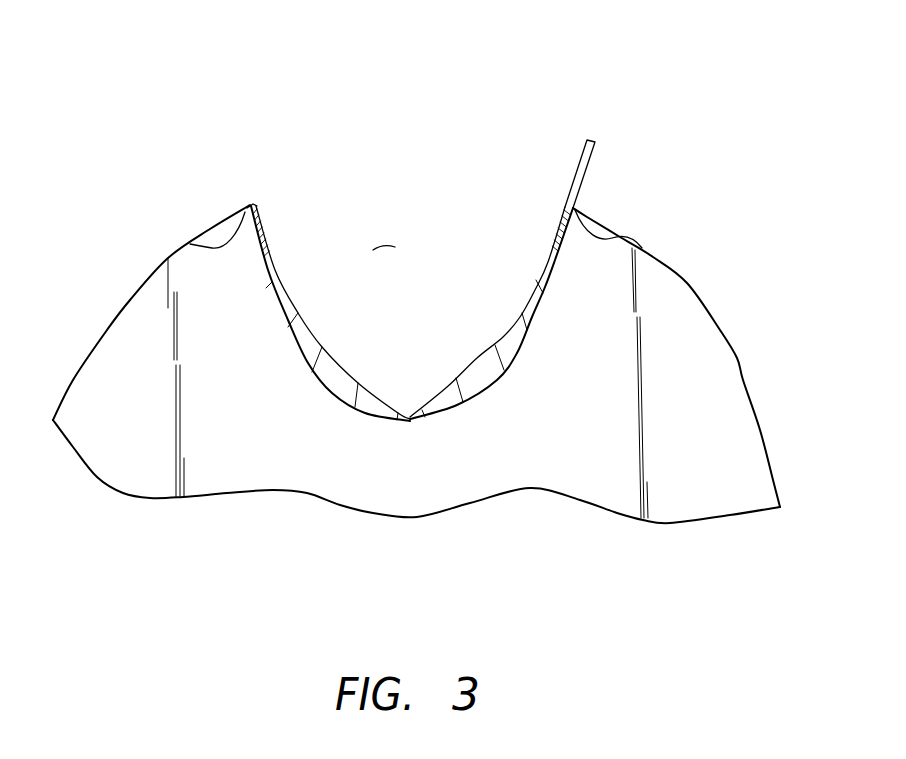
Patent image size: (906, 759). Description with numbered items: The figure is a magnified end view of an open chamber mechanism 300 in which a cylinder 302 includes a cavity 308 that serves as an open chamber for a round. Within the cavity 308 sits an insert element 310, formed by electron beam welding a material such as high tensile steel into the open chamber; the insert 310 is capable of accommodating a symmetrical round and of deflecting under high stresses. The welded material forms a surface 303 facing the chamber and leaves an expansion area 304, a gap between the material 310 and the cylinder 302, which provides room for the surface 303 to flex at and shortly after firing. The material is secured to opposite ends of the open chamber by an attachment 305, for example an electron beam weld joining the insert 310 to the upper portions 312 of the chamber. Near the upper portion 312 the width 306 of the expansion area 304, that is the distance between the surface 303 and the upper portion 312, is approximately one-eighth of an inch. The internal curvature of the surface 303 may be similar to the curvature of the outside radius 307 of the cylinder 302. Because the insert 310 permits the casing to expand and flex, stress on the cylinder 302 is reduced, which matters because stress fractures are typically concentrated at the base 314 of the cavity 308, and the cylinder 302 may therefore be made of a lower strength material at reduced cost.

The open chamber mechanism 300 is at (170, 93).
The cylinder 302 is at (691, 343).
The surface 303 is at (535, 287).
The expansion area 304 is at (481, 378).
The attachment 305 is at (574, 209).
The width of the expansion area 306 is at (545, 131).
The outside radius 307 is at (641, 249).
The cavity 308 is at (383, 245).
The insert element 310 is at (437, 396).
The upper portion 312 is at (192, 240).
The base 314 is at (320, 384).